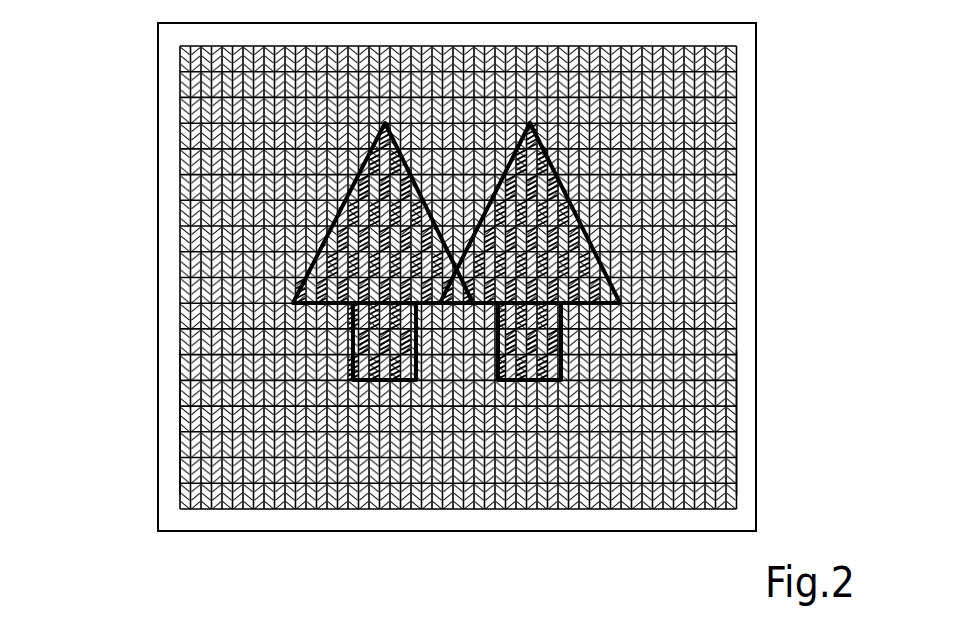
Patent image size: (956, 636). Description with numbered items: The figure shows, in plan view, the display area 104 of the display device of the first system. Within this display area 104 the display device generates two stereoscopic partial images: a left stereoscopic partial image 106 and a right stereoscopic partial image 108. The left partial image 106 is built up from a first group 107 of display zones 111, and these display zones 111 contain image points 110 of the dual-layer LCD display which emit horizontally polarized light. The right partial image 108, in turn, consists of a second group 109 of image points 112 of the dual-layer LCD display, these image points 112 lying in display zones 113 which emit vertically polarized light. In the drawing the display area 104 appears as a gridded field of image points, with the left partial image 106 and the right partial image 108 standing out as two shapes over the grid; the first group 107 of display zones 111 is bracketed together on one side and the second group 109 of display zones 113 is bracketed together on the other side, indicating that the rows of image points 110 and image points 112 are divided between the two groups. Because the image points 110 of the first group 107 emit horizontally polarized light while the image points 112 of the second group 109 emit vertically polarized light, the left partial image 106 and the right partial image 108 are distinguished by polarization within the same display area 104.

The display area 104 is at (745, 131).
The left stereoscopic partial image 106 is at (266, 290).
The first group 107 is at (110, 350).
The right stereoscopic partial image 108 is at (645, 291).
The second group 109 is at (812, 350).
The image points 110 is at (335, 207).
The display zones 111 is at (185, 465).
The image points 112 is at (583, 211).
The display zones 113 is at (732, 465).